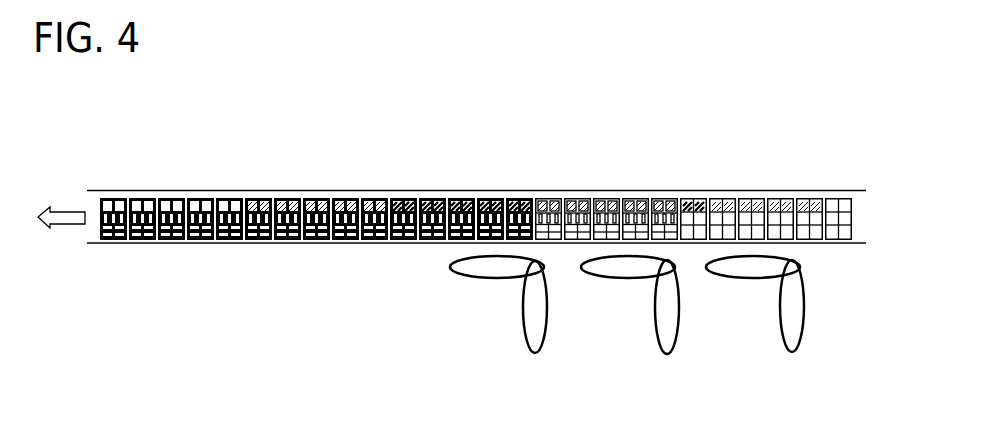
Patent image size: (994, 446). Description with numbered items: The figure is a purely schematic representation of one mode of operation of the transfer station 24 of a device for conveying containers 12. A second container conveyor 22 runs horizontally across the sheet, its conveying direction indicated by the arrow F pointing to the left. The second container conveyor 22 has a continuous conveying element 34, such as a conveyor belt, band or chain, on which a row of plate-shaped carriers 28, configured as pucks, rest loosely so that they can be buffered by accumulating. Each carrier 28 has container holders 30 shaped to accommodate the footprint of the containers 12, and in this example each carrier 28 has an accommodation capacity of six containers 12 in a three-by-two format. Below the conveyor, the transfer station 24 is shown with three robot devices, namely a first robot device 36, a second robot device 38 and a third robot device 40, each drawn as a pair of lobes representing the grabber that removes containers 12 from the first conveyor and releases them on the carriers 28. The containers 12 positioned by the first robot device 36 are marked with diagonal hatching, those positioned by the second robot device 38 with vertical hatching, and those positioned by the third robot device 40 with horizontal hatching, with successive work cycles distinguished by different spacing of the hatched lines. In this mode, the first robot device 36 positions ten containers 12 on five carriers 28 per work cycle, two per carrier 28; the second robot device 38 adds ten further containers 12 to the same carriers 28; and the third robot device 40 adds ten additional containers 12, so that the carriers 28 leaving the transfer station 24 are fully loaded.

The container 12 is at (502, 220).
The second container conveyor 22 is at (186, 191).
The conveying element 34 is at (321, 192).
The carrier 28 is at (516, 189).
The first container holder 30 is at (860, 203).
The transfer station 24 is at (683, 337).
The first robot device 36 is at (790, 330).
The second robot device 38 is at (667, 330).
The third robot device 40 is at (535, 328).
The arrow F is at (53, 228).